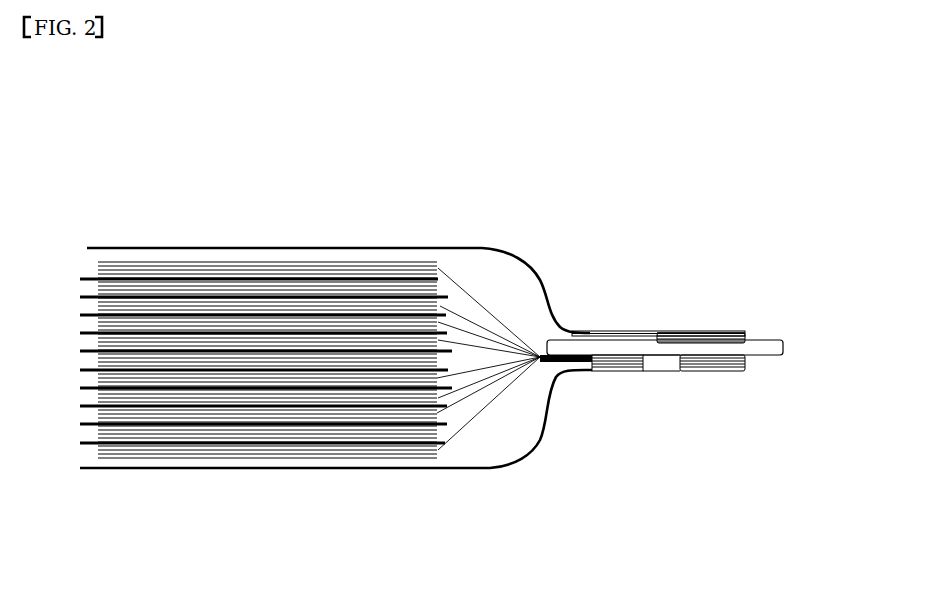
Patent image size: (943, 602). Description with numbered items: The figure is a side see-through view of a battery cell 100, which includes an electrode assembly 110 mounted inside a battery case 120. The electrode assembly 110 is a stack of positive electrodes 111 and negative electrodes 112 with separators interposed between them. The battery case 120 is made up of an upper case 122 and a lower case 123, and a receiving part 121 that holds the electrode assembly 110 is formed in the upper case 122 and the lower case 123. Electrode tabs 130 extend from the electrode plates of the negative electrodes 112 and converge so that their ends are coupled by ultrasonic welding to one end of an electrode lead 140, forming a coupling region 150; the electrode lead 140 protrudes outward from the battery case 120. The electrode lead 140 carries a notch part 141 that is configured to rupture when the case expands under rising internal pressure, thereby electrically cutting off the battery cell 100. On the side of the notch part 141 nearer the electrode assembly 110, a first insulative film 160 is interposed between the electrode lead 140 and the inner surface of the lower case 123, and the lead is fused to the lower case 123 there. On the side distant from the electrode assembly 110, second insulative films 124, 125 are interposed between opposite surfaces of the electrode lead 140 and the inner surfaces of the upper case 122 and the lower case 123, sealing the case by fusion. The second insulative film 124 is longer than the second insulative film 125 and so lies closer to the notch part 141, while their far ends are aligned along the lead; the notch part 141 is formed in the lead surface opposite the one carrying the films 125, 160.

The battery cell 100 is at (140, 108).
The electrode assembly 110 is at (65, 258).
The positive electrodes 111 is at (411, 262).
The negative electrodes 112 is at (417, 466).
The battery case 120 is at (314, 245).
The receiving part 121 is at (457, 451).
The upper case 122 is at (518, 258).
The lower case 123 is at (512, 457).
The second insulative film 124 is at (700, 332).
The second insulative film 125 is at (702, 371).
The electrode tabs 130 is at (582, 372).
The electrode lead 140 is at (758, 358).
The notch part 141 is at (638, 338).
The coupling region 150 is at (563, 329).
The first insulative film 160 is at (600, 362).